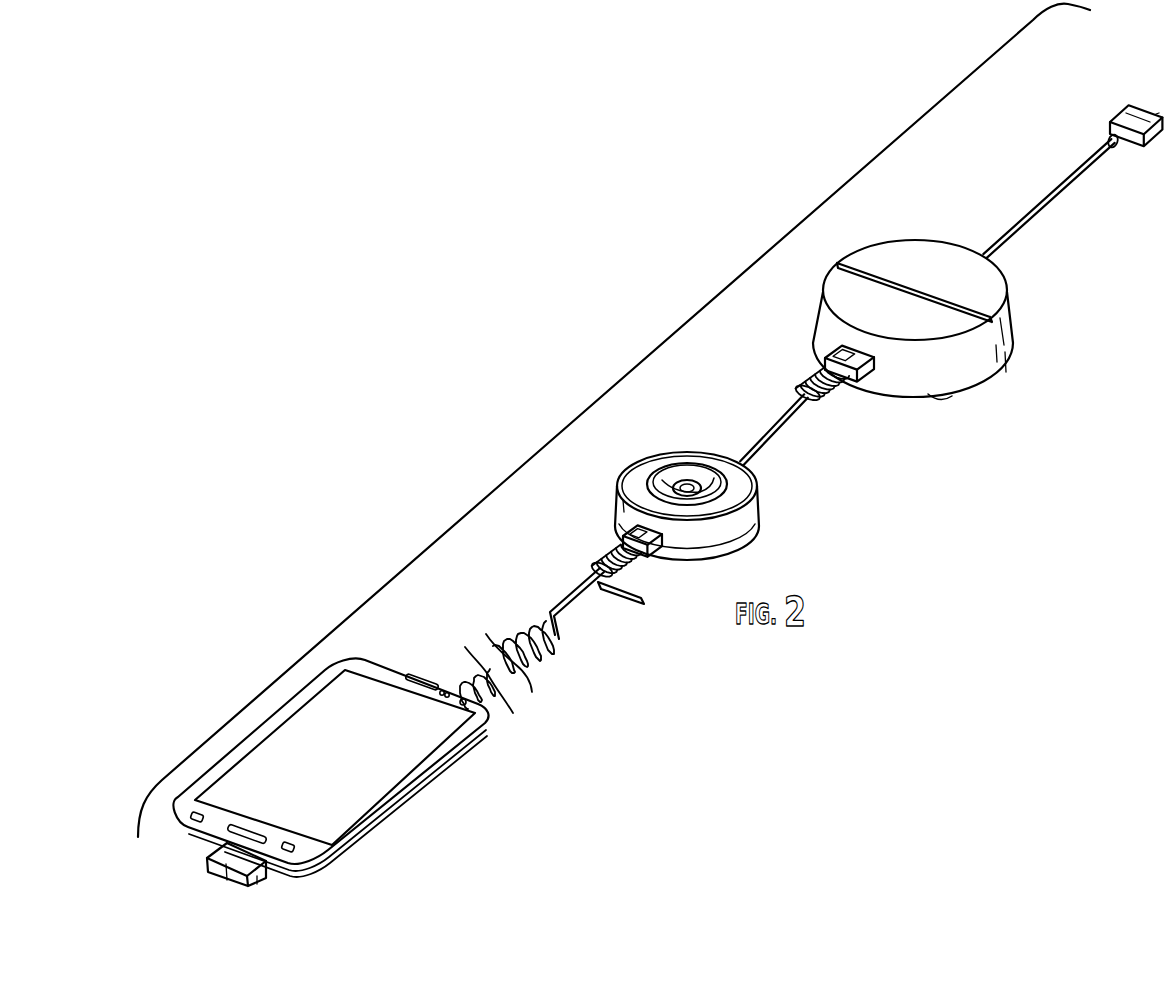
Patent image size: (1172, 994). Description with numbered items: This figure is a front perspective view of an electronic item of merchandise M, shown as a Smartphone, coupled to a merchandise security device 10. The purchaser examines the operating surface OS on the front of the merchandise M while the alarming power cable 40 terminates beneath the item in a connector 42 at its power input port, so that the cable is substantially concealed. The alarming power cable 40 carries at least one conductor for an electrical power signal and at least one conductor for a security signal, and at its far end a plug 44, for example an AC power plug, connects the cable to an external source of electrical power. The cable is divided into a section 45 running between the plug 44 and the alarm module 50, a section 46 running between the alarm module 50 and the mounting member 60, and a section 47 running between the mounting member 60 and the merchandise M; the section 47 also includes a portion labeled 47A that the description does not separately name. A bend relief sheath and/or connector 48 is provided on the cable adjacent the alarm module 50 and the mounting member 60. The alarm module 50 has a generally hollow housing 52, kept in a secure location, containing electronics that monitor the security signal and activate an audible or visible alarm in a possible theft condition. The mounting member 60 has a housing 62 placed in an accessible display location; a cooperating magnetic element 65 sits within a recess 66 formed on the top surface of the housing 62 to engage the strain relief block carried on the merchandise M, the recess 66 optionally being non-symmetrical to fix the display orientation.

The merchandise security device 10 is at (603, 393).
The electronic item of merchandise M is at (330, 745).
The operating surface OS is at (350, 765).
The alarming power cable 40 is at (502, 602).
The connector 42 is at (212, 869).
The plug 44 is at (1131, 116).
The section 45 is at (1025, 213).
The section 46 is at (772, 425).
The section 47 is at (554, 622).
The coiled portion of cable 47A is at (547, 670).
The bend relief sheath and/or connector 48 is at (606, 557).
The alarm module 50 is at (913, 294).
The housing 52 is at (918, 258).
The mounting member 60 is at (745, 465).
The housing 62 is at (742, 520).
The cooperating magnetic element 65 is at (688, 486).
The recess 66 is at (658, 478).